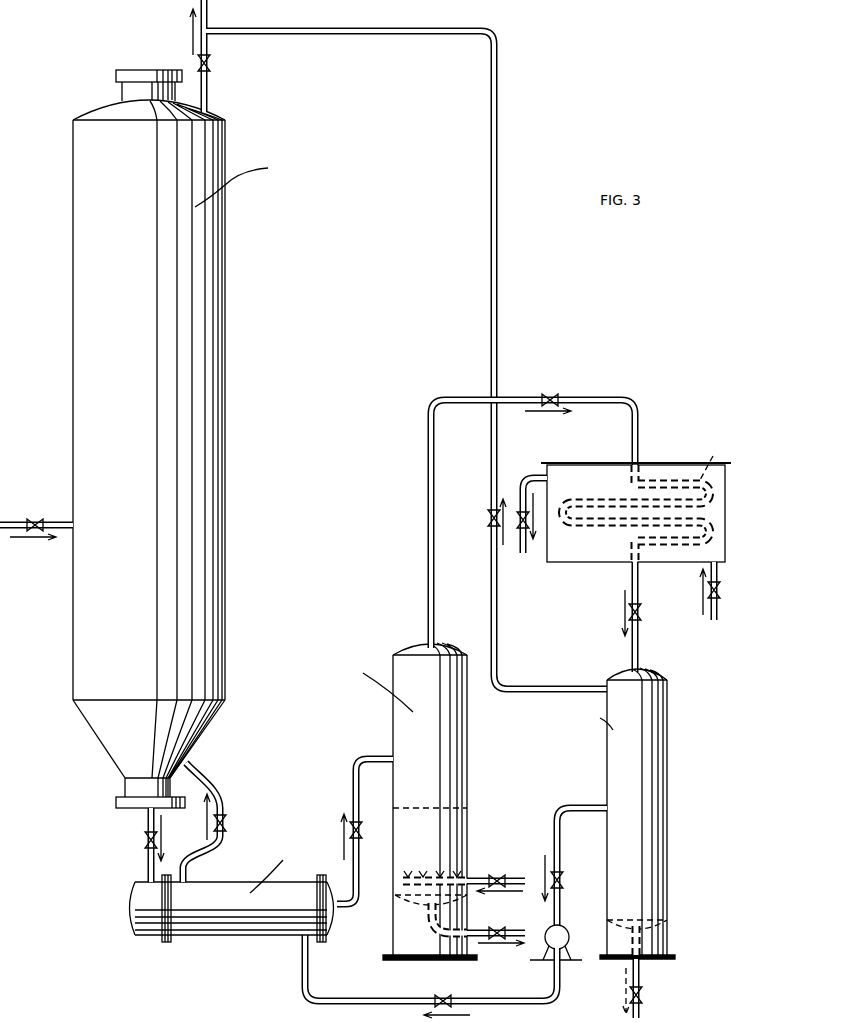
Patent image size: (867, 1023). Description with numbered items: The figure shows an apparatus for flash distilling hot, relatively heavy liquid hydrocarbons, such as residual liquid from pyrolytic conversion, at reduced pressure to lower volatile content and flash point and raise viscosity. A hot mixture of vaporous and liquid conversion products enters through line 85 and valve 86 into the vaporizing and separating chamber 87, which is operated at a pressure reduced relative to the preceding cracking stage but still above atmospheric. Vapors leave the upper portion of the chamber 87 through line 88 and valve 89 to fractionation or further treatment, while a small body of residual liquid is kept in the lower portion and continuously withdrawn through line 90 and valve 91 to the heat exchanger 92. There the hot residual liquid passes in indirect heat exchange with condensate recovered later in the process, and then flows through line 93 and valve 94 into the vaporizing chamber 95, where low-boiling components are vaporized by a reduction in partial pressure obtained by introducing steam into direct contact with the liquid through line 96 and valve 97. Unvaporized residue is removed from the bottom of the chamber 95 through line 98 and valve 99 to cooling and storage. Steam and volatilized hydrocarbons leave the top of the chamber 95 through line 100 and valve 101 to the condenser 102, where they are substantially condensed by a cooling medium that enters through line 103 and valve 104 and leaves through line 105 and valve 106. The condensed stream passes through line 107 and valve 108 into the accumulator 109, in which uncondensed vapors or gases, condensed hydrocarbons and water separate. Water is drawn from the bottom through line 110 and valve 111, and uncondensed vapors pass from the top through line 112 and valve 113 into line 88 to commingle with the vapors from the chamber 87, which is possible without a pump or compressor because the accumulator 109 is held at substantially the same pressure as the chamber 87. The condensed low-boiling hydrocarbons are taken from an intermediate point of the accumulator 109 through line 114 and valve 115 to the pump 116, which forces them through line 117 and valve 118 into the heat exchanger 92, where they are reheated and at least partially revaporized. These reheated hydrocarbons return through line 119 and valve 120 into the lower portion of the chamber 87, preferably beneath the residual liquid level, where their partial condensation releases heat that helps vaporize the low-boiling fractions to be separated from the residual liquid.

The line 85 is at (36, 543).
The valve 86 is at (40, 518).
The vaporizing and separating chamber 87 is at (222, 439).
The line 88 is at (207, 97).
The valve 89 is at (209, 64).
The line 90 is at (148, 818).
The valve 91 is at (146, 843).
The heat exchanger 92 is at (232, 884).
The line 93 is at (359, 873).
The valve 94 is at (360, 826).
The vaporizing chamber 95 is at (369, 801).
The line 96 is at (473, 887).
The valve 97 is at (498, 876).
The line 98 is at (478, 940).
The valve 99 is at (500, 928).
The line 100 is at (434, 612).
The valve 101 is at (552, 395).
The condenser 102 is at (636, 501).
The line 103 is at (718, 612).
The valve 104 is at (719, 588).
The line 105 is at (520, 496).
The valve 106 is at (518, 521).
The line 107 is at (639, 580).
The valve 108 is at (640, 611).
The accumulator 109 is at (573, 813).
The line 110 is at (641, 977).
The valve 111 is at (641, 1000).
The line 112 is at (497, 640).
The valve 113 is at (489, 516).
The line 114 is at (560, 838).
The valve 115 is at (561, 883).
The pump 116 is at (561, 928).
The line 117 is at (561, 983).
The valve 118 is at (447, 996).
The line 119 is at (187, 868).
The valve 120 is at (224, 821).